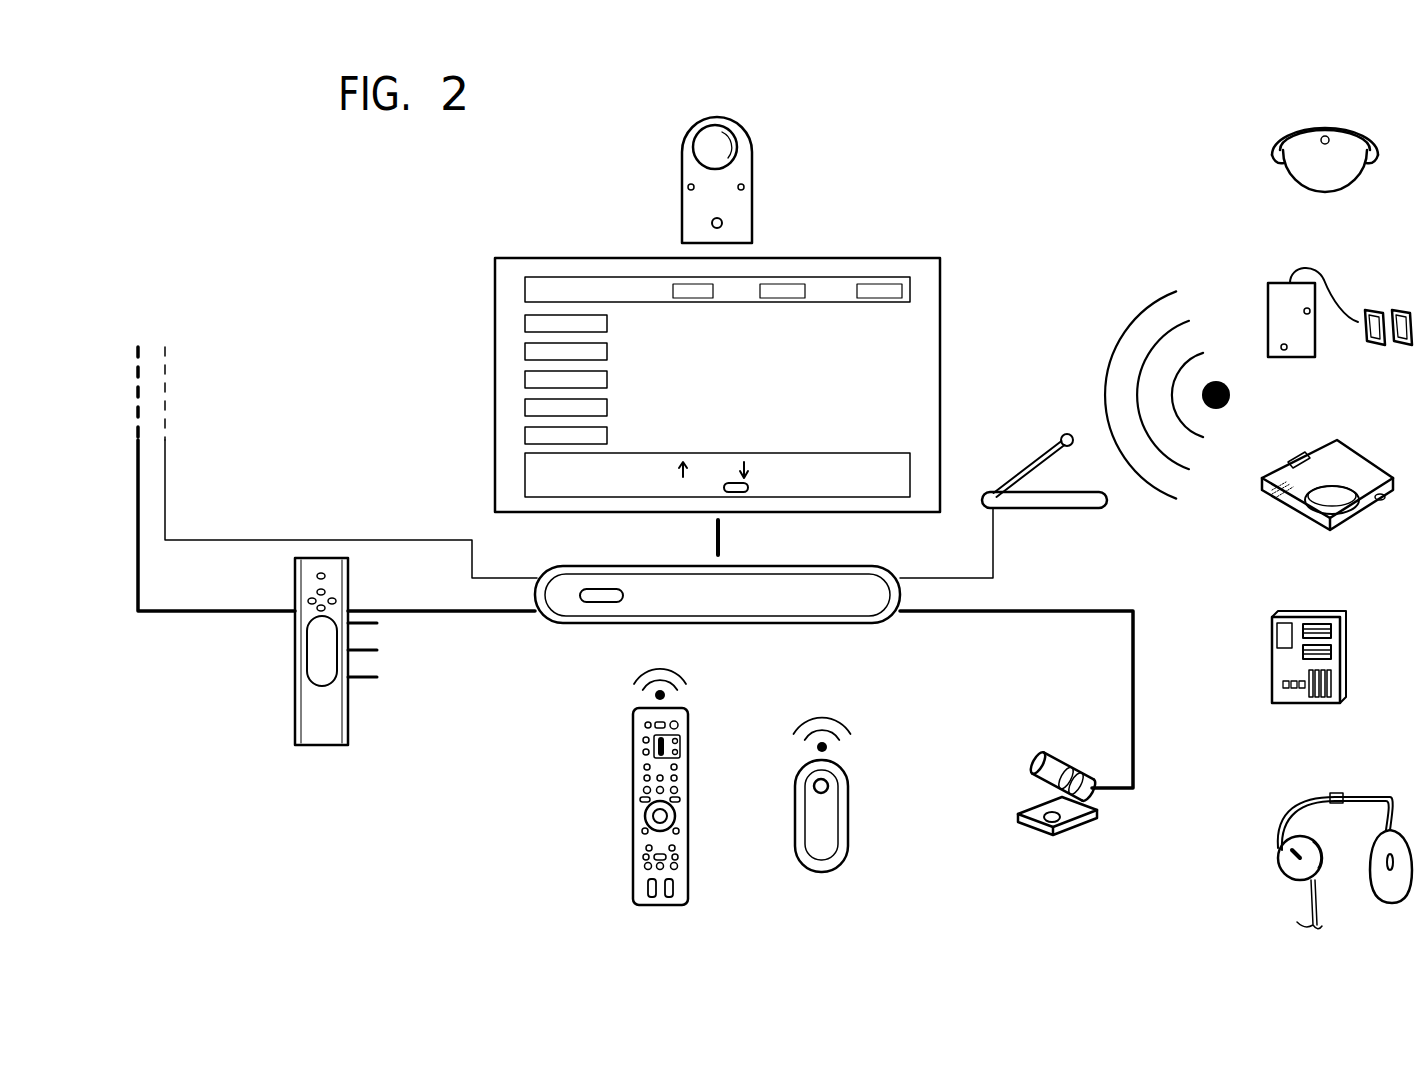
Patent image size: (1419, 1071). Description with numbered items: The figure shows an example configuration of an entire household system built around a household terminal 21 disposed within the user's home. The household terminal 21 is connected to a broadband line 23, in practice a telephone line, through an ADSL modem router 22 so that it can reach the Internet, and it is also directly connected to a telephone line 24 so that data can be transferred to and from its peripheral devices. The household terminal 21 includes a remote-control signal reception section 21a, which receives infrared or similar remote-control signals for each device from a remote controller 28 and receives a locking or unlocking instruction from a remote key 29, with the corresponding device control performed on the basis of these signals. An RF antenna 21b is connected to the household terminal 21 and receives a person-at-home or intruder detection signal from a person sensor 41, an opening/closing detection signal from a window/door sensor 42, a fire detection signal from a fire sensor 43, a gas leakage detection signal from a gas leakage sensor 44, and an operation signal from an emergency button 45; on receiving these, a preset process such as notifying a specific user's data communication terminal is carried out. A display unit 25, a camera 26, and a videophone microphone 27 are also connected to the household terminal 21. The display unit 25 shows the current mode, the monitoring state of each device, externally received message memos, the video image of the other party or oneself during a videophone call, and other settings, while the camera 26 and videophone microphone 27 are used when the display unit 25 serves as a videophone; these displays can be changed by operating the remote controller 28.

The household terminal 21 is at (745, 624).
The remote-control signal reception section 21a is at (597, 596).
The RF antenna 21b is at (1065, 510).
The modem router 22 is at (348, 718).
The broadband line 23 is at (190, 613).
The telephone line 24 is at (220, 540).
The display unit 25 is at (495, 287).
The camera 26 is at (755, 181).
The videophone microphone 27 is at (1060, 760).
The remote controller 28 is at (633, 810).
The remote key 29 is at (848, 801).
The person sensor 41 is at (1318, 183).
The window/door sensor 42 is at (1292, 350).
The fire sensor 43 is at (1307, 532).
The gas leakage sensor 44 is at (1287, 705).
The emergency button 45 is at (1290, 868).